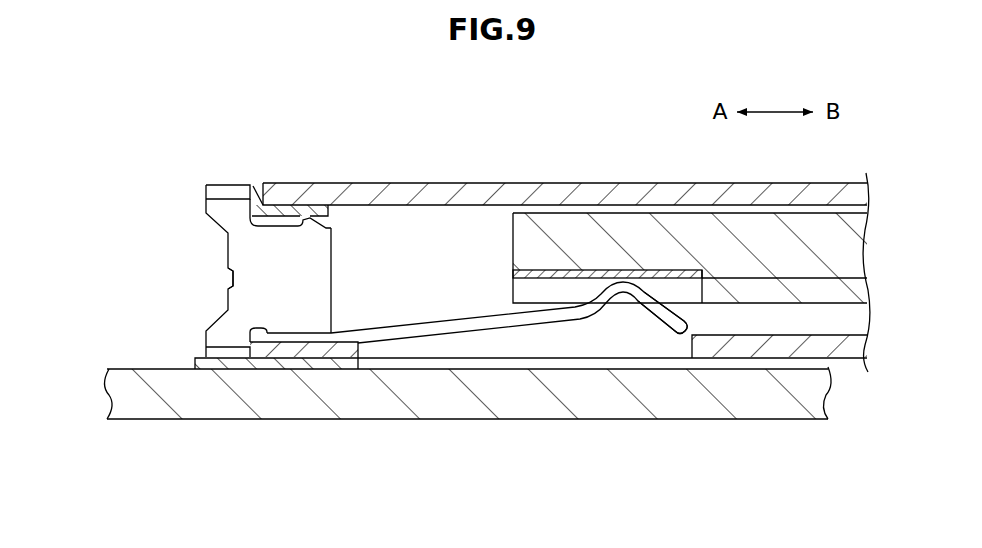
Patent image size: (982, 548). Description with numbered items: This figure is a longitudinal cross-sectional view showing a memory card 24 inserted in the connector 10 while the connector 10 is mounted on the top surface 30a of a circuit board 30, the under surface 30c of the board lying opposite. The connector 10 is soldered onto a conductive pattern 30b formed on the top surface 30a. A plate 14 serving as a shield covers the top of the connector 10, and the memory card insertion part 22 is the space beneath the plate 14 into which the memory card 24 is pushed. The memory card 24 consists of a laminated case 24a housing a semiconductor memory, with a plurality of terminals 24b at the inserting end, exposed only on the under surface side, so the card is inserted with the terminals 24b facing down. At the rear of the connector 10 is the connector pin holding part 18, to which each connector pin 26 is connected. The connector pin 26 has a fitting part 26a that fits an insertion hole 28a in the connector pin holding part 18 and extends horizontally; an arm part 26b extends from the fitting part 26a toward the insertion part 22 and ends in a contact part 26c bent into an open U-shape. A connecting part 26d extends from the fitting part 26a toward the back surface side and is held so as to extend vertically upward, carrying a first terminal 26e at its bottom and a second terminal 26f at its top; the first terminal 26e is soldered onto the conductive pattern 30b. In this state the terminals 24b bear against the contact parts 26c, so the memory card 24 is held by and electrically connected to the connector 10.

The connector 10 is at (457, 178).
The plate 14 is at (387, 192).
The connector pin holding part 18 is at (305, 352).
The memory card insertion part 22 is at (497, 222).
The memory card 24 is at (751, 212).
The case 24a is at (832, 222).
The terminals 24b is at (658, 272).
The connector pin 26 is at (183, 188).
The fitting part 26a is at (296, 328).
The arm part 26b is at (445, 328).
The contact part 26c is at (627, 303).
The connecting part 26d is at (234, 278).
The first terminal 26e is at (207, 353).
The second terminal 26f is at (226, 188).
The insertion hole 28a is at (322, 338).
The circuit board 30 is at (555, 408).
The top surface 30a is at (132, 370).
The conductive pattern 30b is at (232, 366).
The under surface 30c is at (153, 420).